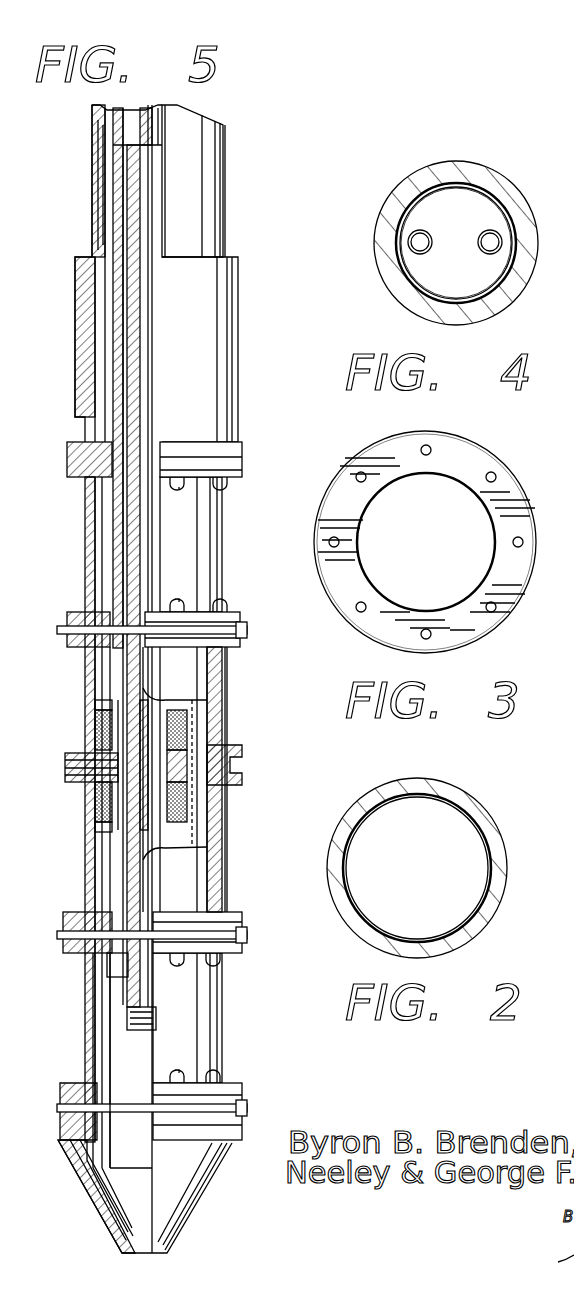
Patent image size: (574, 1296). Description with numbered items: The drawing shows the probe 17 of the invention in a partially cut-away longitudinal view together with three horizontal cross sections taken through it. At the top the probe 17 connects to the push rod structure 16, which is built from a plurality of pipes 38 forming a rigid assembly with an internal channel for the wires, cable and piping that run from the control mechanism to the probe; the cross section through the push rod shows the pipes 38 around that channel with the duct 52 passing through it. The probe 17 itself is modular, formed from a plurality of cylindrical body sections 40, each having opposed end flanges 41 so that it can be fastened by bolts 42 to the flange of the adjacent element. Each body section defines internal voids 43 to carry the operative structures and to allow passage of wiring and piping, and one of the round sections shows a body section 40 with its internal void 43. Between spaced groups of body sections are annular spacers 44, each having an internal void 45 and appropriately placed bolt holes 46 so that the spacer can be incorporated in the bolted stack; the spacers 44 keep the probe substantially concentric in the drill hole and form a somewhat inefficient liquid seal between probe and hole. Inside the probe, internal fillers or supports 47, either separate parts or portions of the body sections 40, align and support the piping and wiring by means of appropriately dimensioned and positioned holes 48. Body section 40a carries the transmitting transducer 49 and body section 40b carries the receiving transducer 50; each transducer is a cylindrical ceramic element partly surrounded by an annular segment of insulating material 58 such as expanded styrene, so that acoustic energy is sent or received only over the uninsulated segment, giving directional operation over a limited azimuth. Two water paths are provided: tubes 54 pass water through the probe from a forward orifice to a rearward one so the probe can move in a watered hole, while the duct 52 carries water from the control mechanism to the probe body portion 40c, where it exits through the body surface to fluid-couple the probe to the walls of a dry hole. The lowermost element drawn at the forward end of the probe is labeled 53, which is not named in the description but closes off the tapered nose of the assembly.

In FIG. 5, the push rod structure 16 is at (234, 151).
In FIG. 4, the push rod structure 16 is at (506, 164).
In FIG. 5, the probe 17 is at (248, 308).
In FIG. 4, the probe 17 is at (489, 208).
In FIG. 3, the probe 17 is at (516, 464).
In FIG. 2, the probe 17 is at (503, 824).
In FIG. 5, the pipes 38 is at (183, 181).
In FIG. 4, the pipes 38 is at (422, 176).
In FIG. 5, the cylindrical body sections 40 is at (200, 383).
In FIG. 2, the cylindrical body sections 40 is at (352, 821).
In FIG. 5, the body section carrying transmitting transducer 40a is at (88, 703).
In FIG. 5, the body section carrying receiving transducer 40b is at (226, 875).
In FIG. 5, the probe body portion 40c is at (228, 769).
In FIG. 5, the end flanges 41 is at (244, 462).
In FIG. 5, the bolts 42 is at (218, 605).
In FIG. 5, the internal voids 43 is at (117, 1001).
In FIG. 2, the internal voids 43 is at (455, 886).
In FIG. 5, the annular spacers 44 is at (250, 628).
In FIG. 3, the annular spacers 44 is at (400, 441).
In FIG. 3, the internal voids of spacers 45 is at (415, 580).
In FIG. 3, the bolt holes 46 is at (488, 602).
In FIG. 5, the internal fillers or supports 47 is at (108, 703).
In FIG. 5, the holes 48 is at (110, 718).
In FIG. 5, the transmitting transducer 49 is at (190, 731).
In FIG. 5, the receiving transducer 50 is at (190, 805).
In FIG. 5, the duct 52 is at (127, 343).
In FIG. 4, the duct 52 is at (479, 250).
In FIG. 5, the conical nose 53 is at (170, 1198).
In FIG. 5, the tubes 54 is at (65, 766).
In FIG. 5, the insulating material 58 is at (95, 727).